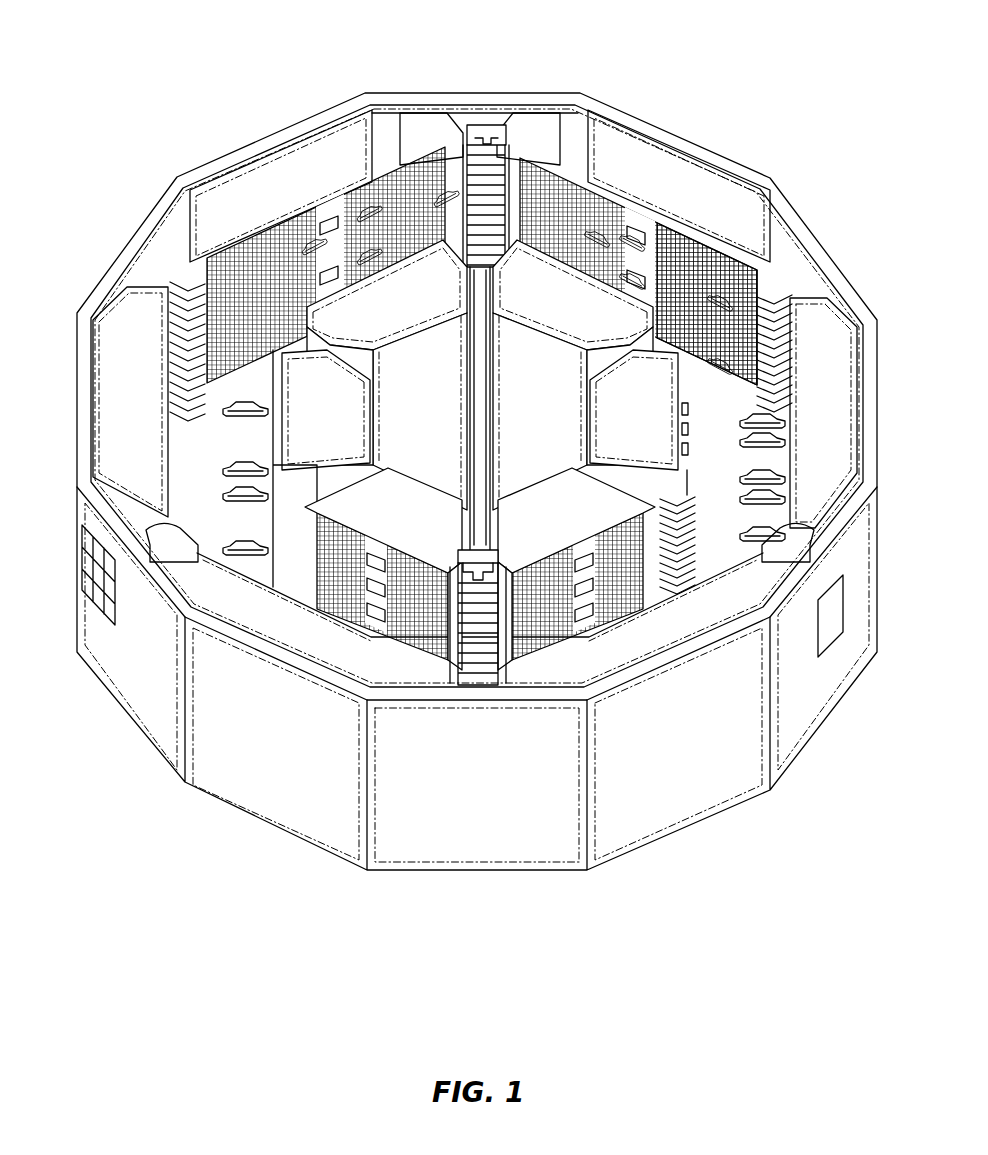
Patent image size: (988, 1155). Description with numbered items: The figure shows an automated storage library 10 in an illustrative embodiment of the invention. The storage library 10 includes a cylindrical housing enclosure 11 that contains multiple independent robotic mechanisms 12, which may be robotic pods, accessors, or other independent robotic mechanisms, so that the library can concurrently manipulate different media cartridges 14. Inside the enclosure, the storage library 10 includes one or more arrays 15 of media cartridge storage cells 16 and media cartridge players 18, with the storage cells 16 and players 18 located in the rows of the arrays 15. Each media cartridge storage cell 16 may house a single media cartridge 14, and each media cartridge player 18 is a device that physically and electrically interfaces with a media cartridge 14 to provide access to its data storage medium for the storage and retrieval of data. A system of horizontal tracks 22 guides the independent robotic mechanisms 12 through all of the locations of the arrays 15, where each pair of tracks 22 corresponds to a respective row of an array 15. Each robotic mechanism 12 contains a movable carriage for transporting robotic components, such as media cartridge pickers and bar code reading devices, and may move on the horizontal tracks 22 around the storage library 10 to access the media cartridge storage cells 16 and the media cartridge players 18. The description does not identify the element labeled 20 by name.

The automated storage library 10 is at (697, 50).
The cylindrical housing enclosure 11 is at (822, 243).
The independent robotic mechanisms 12 is at (318, 245).
The media cartridges 14 is at (255, 255).
The arrays 15 is at (298, 157).
The media cartridge storage cells 16 is at (383, 178).
The media cartridge players 18 is at (330, 222).
The mesh grid 20 is at (687, 257).
The horizontal tracks 22 is at (457, 160).